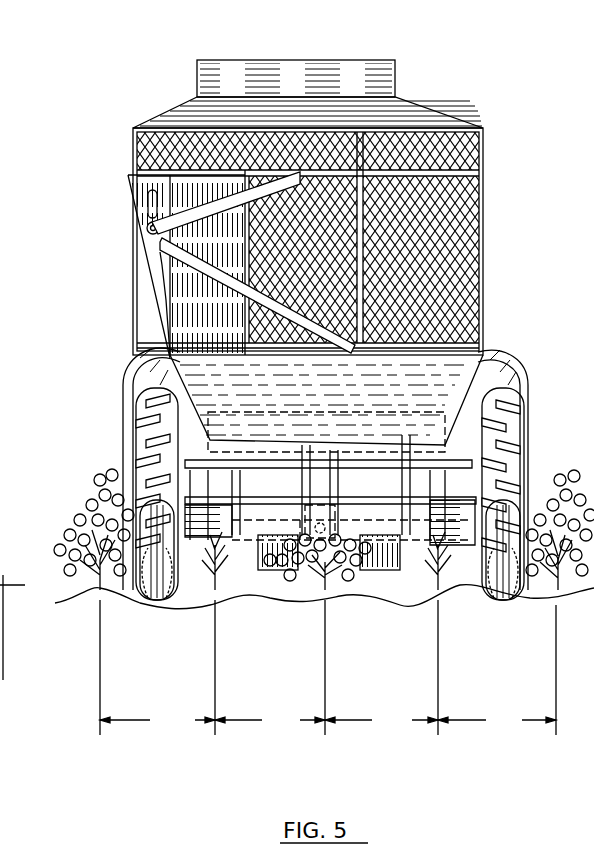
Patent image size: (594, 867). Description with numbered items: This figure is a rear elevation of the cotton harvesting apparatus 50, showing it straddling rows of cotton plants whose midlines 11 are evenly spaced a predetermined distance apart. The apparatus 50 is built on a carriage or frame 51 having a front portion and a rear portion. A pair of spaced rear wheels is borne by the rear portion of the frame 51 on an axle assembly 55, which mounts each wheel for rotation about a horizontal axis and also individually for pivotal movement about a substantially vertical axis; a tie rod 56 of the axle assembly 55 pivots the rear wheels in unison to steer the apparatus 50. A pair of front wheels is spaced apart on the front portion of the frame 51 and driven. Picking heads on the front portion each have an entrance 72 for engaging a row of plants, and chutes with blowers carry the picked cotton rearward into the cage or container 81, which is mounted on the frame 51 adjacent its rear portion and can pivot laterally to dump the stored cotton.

The apparatus 50 is at (445, 86).
The container 81 is at (455, 238).
The frame 51 is at (392, 415).
The entrance 72 is at (212, 570).
The axle assembly 55 is at (455, 570).
The tie rod 56 is at (380, 600).
The midlines 11 is at (583, 678).